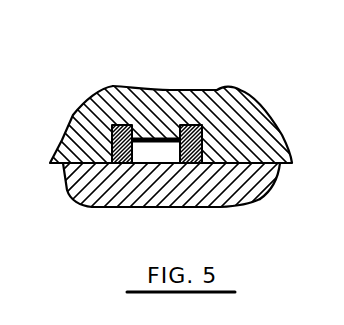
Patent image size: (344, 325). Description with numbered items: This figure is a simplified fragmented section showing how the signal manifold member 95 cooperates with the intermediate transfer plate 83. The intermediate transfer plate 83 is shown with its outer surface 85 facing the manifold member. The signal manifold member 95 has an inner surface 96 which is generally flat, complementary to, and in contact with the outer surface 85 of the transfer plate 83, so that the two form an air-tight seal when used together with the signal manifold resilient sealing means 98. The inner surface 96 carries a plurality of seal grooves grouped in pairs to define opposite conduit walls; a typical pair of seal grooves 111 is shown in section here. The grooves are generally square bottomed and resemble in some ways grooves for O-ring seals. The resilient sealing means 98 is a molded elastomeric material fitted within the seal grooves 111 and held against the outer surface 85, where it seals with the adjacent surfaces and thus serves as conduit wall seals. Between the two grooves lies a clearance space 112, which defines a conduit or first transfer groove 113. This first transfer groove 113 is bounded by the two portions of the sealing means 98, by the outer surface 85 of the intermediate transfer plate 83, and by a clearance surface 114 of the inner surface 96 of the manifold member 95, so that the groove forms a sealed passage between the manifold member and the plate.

The signal manifold member 95 is at (172, 140).
The outer surface of the intermediate transfer plate 85 is at (258, 152).
The pair of seal grooves 111 is at (116, 88).
The signal manifold resilient sealing means 98 is at (112, 130).
The clearance space 112 is at (151, 144).
The first transfer groove 113 is at (204, 189).
The clearance surface 114 is at (142, 150).
The inner surface of the signal manifold member 96 is at (245, 181).
The intermediate transfer plate 83 is at (258, 200).